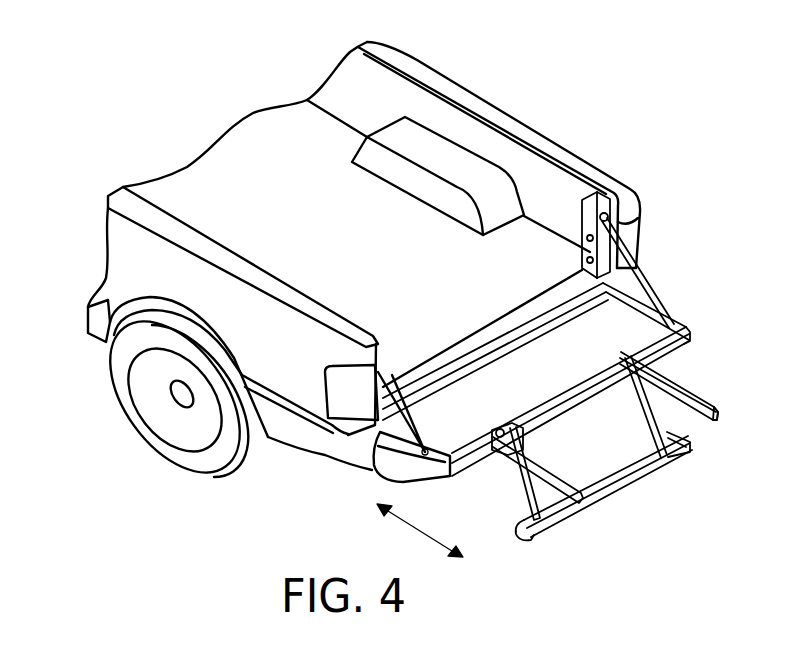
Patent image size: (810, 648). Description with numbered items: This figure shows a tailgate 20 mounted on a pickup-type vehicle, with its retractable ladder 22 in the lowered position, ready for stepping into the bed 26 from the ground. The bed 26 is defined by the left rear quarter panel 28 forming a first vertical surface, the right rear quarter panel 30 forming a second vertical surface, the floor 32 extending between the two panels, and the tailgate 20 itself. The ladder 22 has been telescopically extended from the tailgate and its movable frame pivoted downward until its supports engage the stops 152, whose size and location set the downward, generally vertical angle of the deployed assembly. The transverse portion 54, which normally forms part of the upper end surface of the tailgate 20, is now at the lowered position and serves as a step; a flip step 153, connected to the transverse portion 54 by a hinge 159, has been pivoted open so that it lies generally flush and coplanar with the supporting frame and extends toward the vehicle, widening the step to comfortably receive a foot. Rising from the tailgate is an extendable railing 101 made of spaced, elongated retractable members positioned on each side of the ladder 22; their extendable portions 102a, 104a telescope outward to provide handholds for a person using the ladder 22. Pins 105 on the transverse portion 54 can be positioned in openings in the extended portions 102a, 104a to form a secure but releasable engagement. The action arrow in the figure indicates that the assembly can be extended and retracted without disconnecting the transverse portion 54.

The tailgate 20 is at (655, 236).
The retractable ladder 22 is at (665, 508).
The bed 26 is at (292, 177).
The left rear quarter panel 28 is at (107, 258).
The right rear quarter panel 30 is at (398, 52).
The floor 32 is at (263, 112).
The transverse portion 54 is at (545, 533).
The extendable railing 101 is at (699, 381).
The extendable portion 102a is at (578, 512).
The extendable portion 104a is at (720, 417).
The pins 105 is at (718, 402).
The stops 152 is at (634, 334).
The flip step 153 is at (584, 484).
The hinge 159 is at (655, 470).